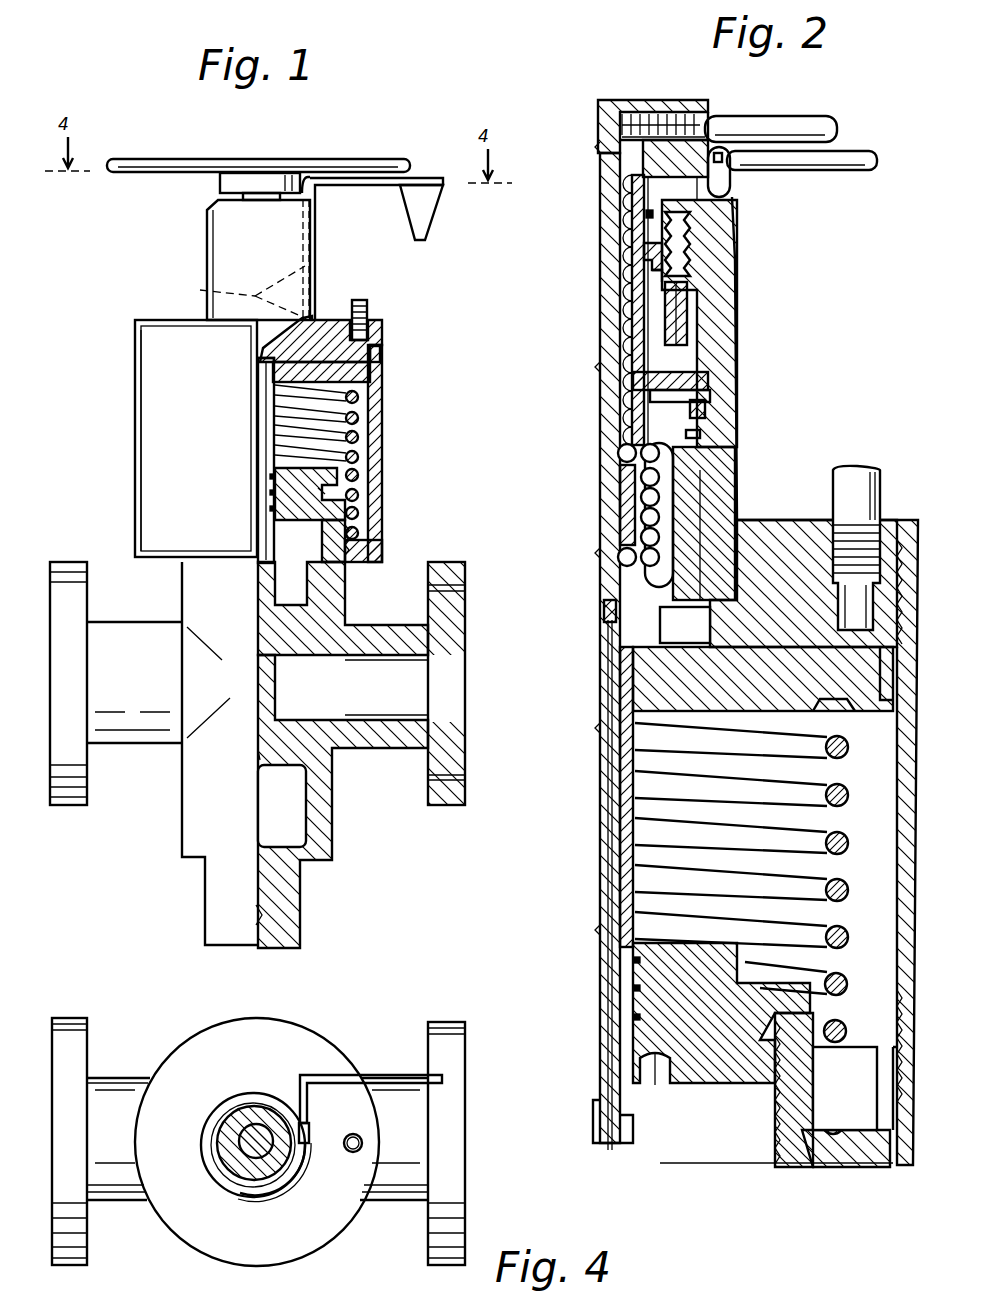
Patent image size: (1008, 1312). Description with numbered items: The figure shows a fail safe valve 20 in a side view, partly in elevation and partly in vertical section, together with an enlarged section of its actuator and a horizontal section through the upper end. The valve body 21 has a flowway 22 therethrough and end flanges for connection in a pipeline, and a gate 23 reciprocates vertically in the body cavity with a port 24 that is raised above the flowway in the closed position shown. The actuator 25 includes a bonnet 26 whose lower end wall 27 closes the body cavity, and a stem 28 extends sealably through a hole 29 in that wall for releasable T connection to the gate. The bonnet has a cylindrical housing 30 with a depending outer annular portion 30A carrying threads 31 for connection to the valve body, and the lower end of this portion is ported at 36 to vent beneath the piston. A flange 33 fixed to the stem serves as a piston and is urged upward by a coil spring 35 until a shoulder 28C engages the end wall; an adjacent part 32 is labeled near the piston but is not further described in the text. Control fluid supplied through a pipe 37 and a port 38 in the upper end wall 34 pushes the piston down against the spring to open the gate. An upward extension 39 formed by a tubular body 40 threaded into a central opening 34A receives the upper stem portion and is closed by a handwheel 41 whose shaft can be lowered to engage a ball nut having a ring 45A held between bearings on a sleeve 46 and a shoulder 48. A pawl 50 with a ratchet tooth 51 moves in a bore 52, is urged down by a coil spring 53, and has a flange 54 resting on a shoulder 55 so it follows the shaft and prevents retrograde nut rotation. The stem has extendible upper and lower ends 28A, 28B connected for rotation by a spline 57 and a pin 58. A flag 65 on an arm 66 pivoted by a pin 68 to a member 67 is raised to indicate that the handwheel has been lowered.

In FIG. 1, the valve 20 is at (400, 478).
In FIG. 1, the valve body 21 is at (346, 848).
In FIG. 1, the flowway 22 is at (430, 715).
In FIG. 1, the gate 23 is at (284, 700).
In FIG. 1, the port 24 is at (252, 630).
In FIG. 1, the actuator 25 is at (126, 406).
In FIG. 1, the bonnet 26 is at (385, 410).
In FIG. 1, the lower end wall 27 is at (280, 465).
In FIG. 1, the stem 28 is at (258, 418).
In FIG. 2, the stem 28 is at (608, 458).
In FIG. 2, the upper end of stem 28A is at (700, 300).
In FIG. 2, the lower end of stem 28B is at (640, 830).
In FIG. 2, the shoulder 28C is at (665, 1085).
In FIG. 1, the hole 29 is at (270, 478).
In FIG. 2, the hole 29 is at (625, 1010).
In FIG. 1, the cylindrical housing 30 is at (135, 473).
In FIG. 2, the depending outer annular portion 30A is at (830, 1167).
In FIG. 1, the threads 31 is at (322, 527).
In FIG. 2, the threads 31 is at (778, 1135).
In FIG. 1, the piston seat 32 is at (318, 489).
In FIG. 1, the flange 33 is at (332, 335).
In FIG. 2, the flange 33 is at (875, 712).
In FIG. 1, the upper end wall 34 is at (318, 318).
In FIG. 2, the central opening 34A is at (705, 505).
In FIG. 1, the coil spring 35 is at (358, 437).
In FIG. 2, the coil spring 35 is at (846, 796).
In FIG. 1, the port 36 is at (372, 565).
In FIG. 1, the pipe 37 is at (364, 300).
In FIG. 4, the pipe 37 is at (362, 1138).
In FIG. 2, the pipe 37 is at (867, 468).
In FIG. 1, the port 38 is at (378, 356).
In FIG. 1, the upward extension 39 is at (207, 222).
In FIG. 1, the tubular body 40 is at (311, 220).
In FIG. 4, the tubular body 40 is at (215, 1112).
In FIG. 1, the handwheel 41 is at (337, 158).
In FIG. 2, the handwheel 41 is at (814, 116).
In FIG. 2, the ring 45A is at (705, 395).
In FIG. 2, the sleeve 46 is at (700, 470).
In FIG. 2, the shoulder 48 is at (705, 375).
In FIG. 2, the pawl 50 is at (690, 312).
In FIG. 2, the ratchet tooth 51 is at (700, 410).
In FIG. 2, the bore 52 is at (690, 340).
In FIG. 2, the coil spring 53 is at (700, 238).
In FIG. 2, the flange 54 is at (640, 248).
In FIG. 2, the shoulder 55 is at (652, 273).
In FIG. 2, the spline 57 is at (700, 434).
In FIG. 2, the pin 58 is at (604, 640).
In FIG. 1, the flag 65 is at (432, 209).
In FIG. 4, the arm 66 is at (382, 1074).
In FIG. 2, the arm 66 is at (862, 150).
In FIG. 2, the member 67 is at (734, 202).
In FIG. 2, the pin 68 is at (721, 153).